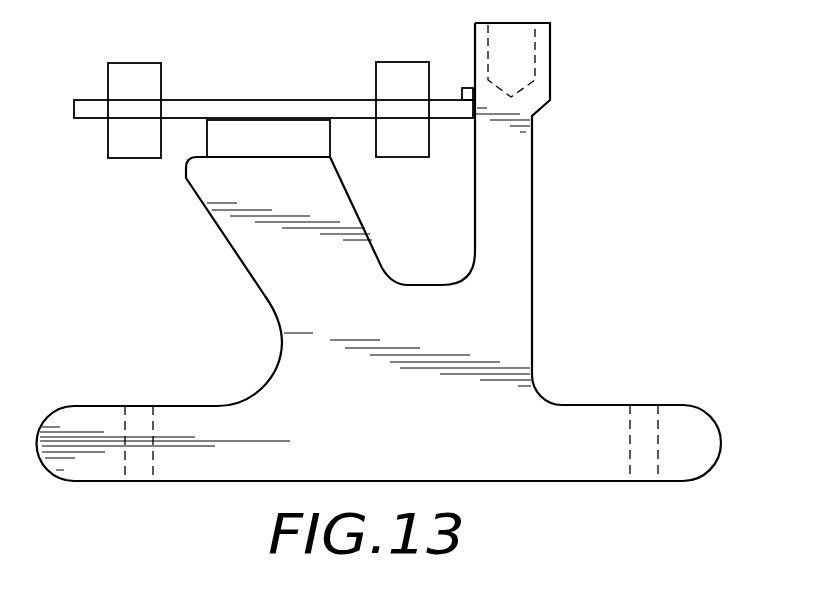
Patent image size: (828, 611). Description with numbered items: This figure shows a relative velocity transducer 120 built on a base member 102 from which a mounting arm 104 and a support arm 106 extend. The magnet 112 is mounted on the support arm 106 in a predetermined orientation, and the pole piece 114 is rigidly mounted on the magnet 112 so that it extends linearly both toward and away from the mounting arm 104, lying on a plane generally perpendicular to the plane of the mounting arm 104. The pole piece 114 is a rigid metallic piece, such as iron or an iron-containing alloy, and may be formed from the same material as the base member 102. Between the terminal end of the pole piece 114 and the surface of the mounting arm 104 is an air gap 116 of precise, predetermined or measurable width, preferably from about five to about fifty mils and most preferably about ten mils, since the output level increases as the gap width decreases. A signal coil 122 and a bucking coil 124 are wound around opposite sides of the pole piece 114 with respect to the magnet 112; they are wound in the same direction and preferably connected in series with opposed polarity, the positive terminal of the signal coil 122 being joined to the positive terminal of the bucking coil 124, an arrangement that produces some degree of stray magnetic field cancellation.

The base member 102 is at (465, 455).
The mounting arm 104 is at (532, 215).
The support arm 106 is at (243, 254).
The magnet 112 is at (205, 147).
The pole piece 114 is at (272, 107).
The air gap 116 is at (466, 86).
The relative velocity transducer 120 is at (610, 319).
The signal coil 122 is at (398, 68).
The bucking coil 124 is at (132, 68).